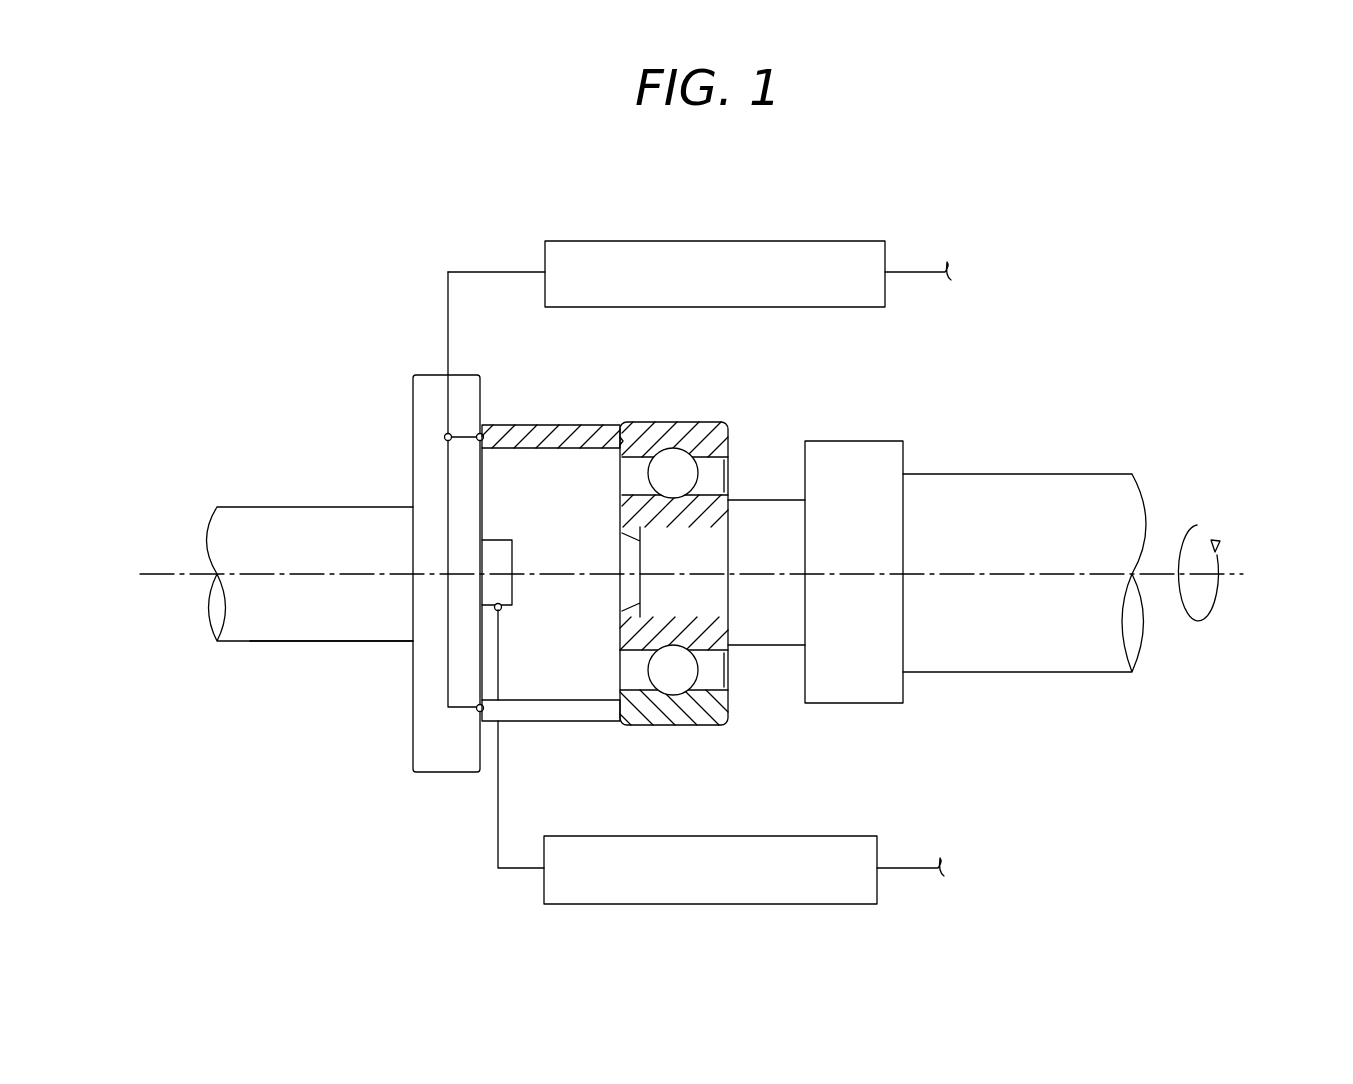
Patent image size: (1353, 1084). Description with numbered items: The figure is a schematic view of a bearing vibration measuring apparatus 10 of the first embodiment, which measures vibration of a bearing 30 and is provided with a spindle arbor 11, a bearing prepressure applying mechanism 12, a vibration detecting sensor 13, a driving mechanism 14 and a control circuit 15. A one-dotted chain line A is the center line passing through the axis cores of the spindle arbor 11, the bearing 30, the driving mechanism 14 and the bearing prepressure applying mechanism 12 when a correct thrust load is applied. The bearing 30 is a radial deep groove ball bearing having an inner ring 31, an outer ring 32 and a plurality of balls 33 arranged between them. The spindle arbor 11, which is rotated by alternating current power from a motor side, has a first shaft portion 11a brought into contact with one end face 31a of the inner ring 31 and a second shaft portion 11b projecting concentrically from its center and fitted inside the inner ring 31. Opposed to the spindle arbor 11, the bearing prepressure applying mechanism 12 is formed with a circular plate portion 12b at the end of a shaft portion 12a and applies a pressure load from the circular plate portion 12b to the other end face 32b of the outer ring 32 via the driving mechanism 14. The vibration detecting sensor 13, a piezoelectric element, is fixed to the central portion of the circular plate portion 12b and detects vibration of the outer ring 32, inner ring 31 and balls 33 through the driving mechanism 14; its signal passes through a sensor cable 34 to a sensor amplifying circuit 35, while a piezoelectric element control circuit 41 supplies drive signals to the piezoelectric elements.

The bearing vibration measuring apparatus 10 is at (1091, 212).
The spindle arbor 11 is at (1012, 473).
The first shaft portion 11a is at (763, 646).
The second shaft portion 11b is at (707, 607).
The bearing prepressure applying mechanism 12 is at (318, 506).
The shaft portion 12a is at (327, 642).
The circular plate portion 12b is at (428, 382).
The vibration detecting sensor 13 is at (497, 540).
The driving mechanism 14 is at (563, 425).
The control circuit 15 is at (800, 236).
The bearing 30 is at (674, 420).
The inner ring 31 is at (728, 492).
The one end face of the inner ring 31a is at (738, 498).
The outer ring 32 is at (705, 430).
The other end face of the outer ring 32b is at (612, 437).
The balls 33 is at (667, 694).
The sensor cable 34 is at (498, 840).
The sensor amplifying circuit 35 is at (800, 836).
The piezoelectric element control circuit 41 is at (715, 241).
The one-dotted chain line A is at (168, 595).